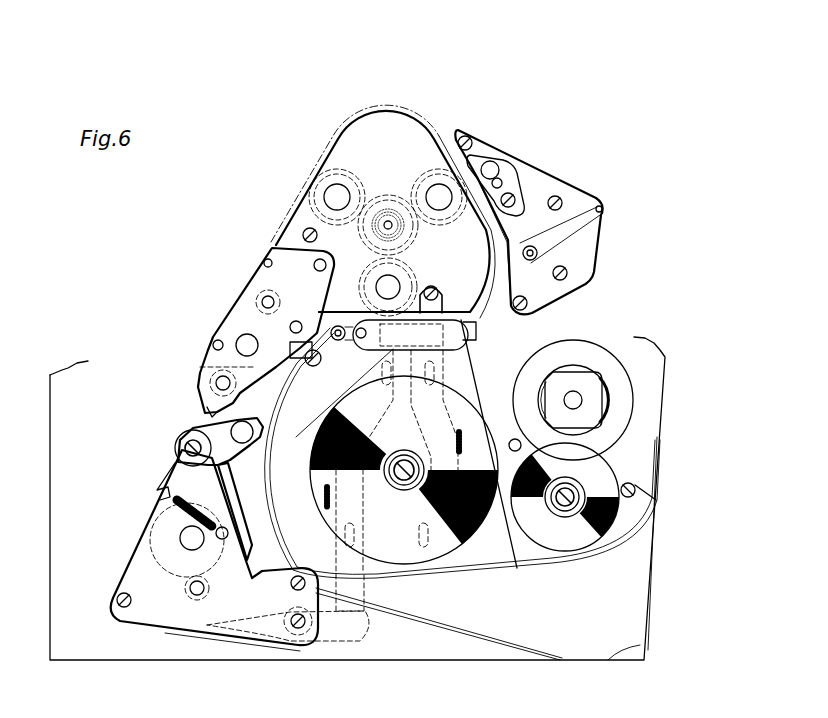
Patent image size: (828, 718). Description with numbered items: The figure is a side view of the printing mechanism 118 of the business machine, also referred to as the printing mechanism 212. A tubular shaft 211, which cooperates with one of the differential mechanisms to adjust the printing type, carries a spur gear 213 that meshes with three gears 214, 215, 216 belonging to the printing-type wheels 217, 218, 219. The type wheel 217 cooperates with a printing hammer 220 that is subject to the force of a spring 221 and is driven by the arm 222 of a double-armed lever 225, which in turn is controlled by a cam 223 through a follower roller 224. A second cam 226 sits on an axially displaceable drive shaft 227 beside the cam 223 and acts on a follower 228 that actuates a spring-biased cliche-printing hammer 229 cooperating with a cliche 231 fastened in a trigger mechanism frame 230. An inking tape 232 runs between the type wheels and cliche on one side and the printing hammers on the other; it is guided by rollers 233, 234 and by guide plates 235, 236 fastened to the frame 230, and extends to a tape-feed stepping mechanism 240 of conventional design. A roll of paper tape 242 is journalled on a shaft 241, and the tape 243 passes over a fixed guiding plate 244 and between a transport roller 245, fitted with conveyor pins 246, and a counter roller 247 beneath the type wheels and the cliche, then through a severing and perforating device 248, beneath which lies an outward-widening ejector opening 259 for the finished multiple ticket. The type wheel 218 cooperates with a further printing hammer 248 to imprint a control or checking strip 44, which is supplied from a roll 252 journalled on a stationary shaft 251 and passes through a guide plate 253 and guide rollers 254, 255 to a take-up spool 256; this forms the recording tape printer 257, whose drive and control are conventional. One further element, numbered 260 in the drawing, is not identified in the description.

The printing mechanism 118 is at (573, 540).
The tubular shaft 211 is at (433, 160).
The printing mechanism 212 is at (386, 147).
The spur gear 213 is at (415, 190).
The gear 214 is at (357, 287).
The gear 215 is at (460, 165).
The gear 216 is at (336, 170).
The printing-type wheel 217 is at (302, 228).
The printing-type wheel 218 is at (452, 155).
The printing-type wheel 219 is at (323, 182).
The printing hammer 220 is at (555, 347).
The spring 221 is at (380, 576).
The arm 222 is at (346, 620).
The cam 223 is at (168, 576).
The follower roller 224 is at (197, 598).
The double-armed lever 225 is at (247, 635).
The cam 226 is at (240, 497).
The drive shaft 227 is at (193, 538).
The follower 228 is at (232, 642).
The cliche-printing hammer 229 is at (478, 342).
The trigger mechanism frame 230 is at (478, 318).
The cliche 231 is at (609, 235).
The inking tape 232 is at (371, 112).
The roller 233 is at (290, 253).
The roller 234 is at (345, 318).
The guide plate 235 is at (500, 277).
The guide plate 236 is at (390, 205).
The tape-feed stepping mechanism 240 is at (223, 358).
The shaft 241 is at (395, 505).
The roll of paper tape 242 is at (451, 531).
The tape 243 is at (485, 400).
The guiding plate 244 is at (470, 352).
The transport roller 245 is at (262, 362).
The conveyor pins 246 is at (300, 300).
The counter roller 247 is at (330, 318).
The severing and perforating device 248 is at (300, 338).
The stationary shaft 251 is at (614, 521).
The roll 252 is at (600, 556).
The guide plate 253 is at (508, 242).
The guide roller 254 is at (467, 146).
The guide roller 255 is at (606, 207).
The take-up spool 256 is at (597, 395).
The recording tape printer 257 is at (528, 178).
The ejector opening 259 is at (503, 550).
The detent 260 is at (305, 403).
The control strip 44 is at (568, 207).